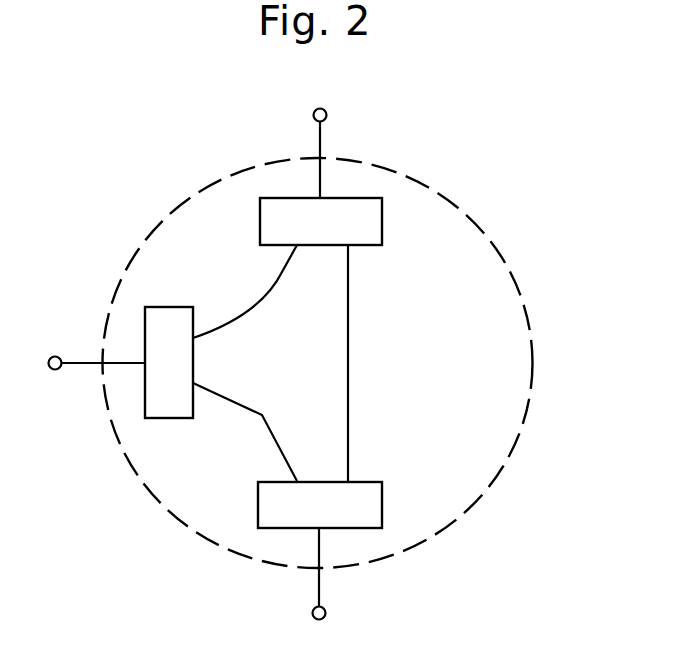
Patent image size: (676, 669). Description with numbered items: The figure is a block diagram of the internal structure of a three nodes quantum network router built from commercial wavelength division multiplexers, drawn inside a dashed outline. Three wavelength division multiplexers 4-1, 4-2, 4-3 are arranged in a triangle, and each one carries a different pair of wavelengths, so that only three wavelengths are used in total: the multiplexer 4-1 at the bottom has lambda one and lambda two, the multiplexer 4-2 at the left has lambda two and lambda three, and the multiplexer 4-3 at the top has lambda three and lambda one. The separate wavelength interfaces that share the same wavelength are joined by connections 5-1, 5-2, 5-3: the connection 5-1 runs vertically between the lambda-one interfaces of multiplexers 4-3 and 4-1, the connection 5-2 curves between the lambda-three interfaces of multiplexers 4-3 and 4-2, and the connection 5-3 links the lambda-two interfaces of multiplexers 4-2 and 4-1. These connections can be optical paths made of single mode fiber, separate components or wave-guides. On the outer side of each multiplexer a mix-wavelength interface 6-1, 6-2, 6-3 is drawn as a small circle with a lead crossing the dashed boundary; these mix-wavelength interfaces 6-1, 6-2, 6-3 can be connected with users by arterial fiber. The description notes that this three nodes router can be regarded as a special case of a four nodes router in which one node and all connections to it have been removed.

The wavelength division multiplexer 4-1 is at (320, 519).
The wavelength division multiplexer 4-2 is at (155, 362).
The wavelength division multiplexer 4-3 is at (321, 208).
The connection 5-1 is at (368, 363).
The connection 5-2 is at (245, 291).
The connection 5-3 is at (245, 432).
The mix-wavelength interface 6-1 is at (279, 577).
The mix-wavelength interface 6-2 is at (93, 331).
The mix-wavelength interface 6-3 is at (346, 152).